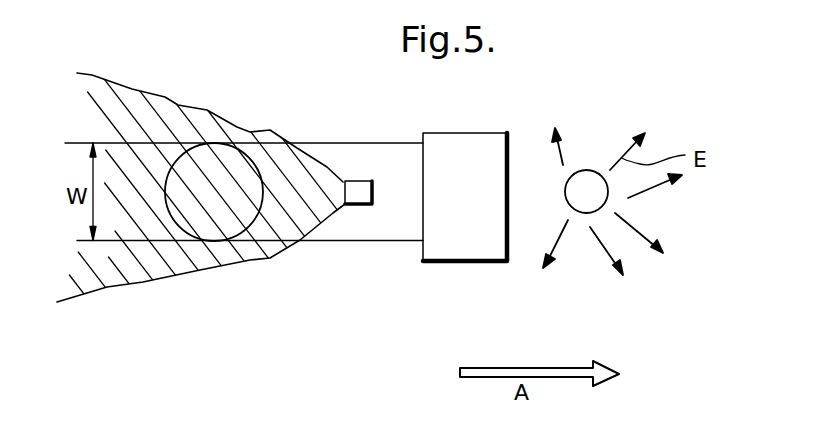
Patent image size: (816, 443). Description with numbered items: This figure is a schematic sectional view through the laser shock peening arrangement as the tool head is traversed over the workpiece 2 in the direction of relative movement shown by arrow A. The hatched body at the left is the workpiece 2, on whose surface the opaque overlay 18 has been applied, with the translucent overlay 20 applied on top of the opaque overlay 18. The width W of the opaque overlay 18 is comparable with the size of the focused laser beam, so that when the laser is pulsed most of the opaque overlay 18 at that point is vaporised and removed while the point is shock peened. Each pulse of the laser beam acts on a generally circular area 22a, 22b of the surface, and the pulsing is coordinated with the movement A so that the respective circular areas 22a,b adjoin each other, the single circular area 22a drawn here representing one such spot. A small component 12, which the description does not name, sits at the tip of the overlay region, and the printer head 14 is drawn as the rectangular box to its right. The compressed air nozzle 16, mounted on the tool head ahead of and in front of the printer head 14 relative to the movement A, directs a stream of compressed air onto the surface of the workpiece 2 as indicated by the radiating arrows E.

The workpiece 2 is at (420, 214).
The sensor head 12 is at (357, 180).
The printer head 14 is at (472, 212).
The compressed air nozzle 16 is at (585, 178).
The opaque overlay 18 is at (353, 228).
The translucent overlay 20 is at (235, 196).
The circular area 22a is at (224, 155).
The circular area 22b is at (202, 156).
The circular areas 22a,b is at (224, 155).